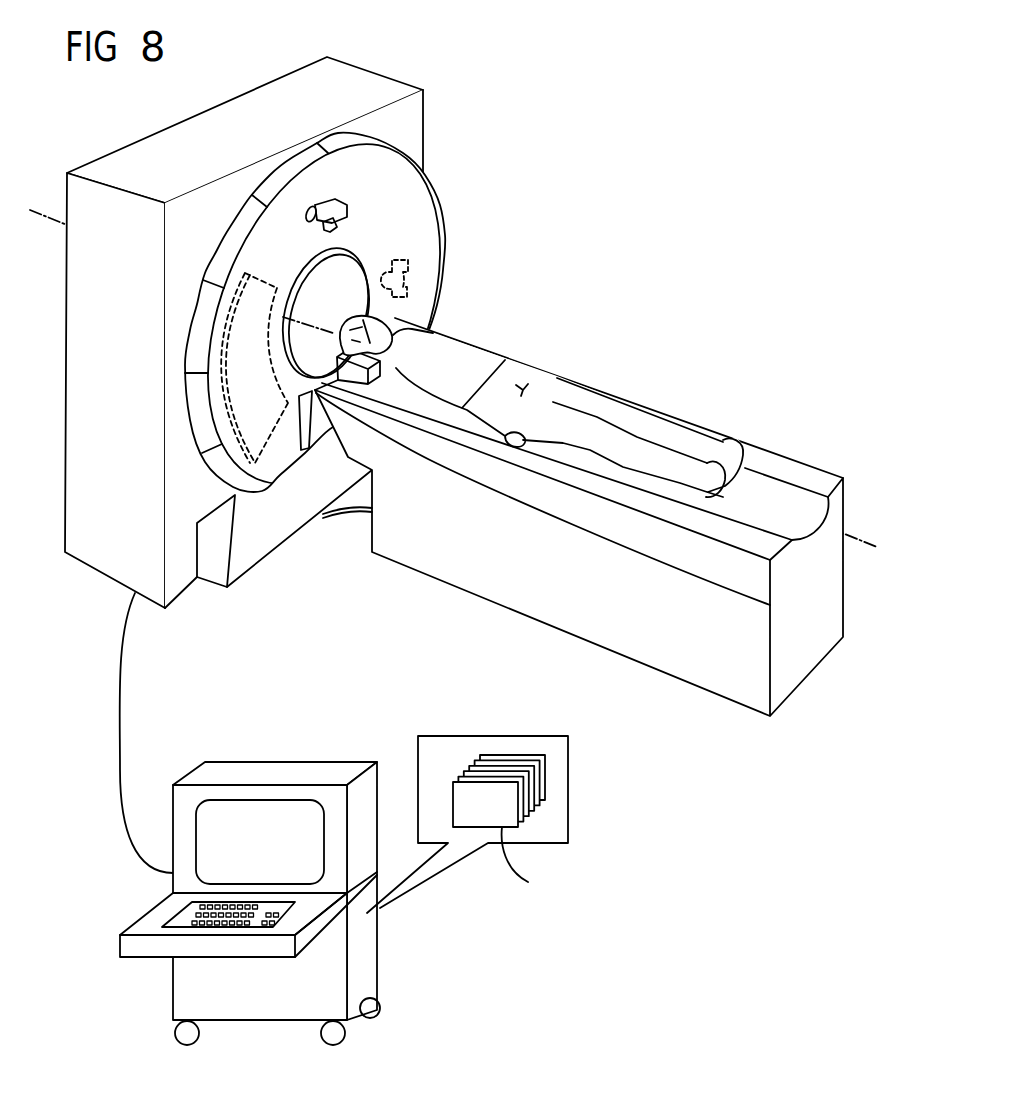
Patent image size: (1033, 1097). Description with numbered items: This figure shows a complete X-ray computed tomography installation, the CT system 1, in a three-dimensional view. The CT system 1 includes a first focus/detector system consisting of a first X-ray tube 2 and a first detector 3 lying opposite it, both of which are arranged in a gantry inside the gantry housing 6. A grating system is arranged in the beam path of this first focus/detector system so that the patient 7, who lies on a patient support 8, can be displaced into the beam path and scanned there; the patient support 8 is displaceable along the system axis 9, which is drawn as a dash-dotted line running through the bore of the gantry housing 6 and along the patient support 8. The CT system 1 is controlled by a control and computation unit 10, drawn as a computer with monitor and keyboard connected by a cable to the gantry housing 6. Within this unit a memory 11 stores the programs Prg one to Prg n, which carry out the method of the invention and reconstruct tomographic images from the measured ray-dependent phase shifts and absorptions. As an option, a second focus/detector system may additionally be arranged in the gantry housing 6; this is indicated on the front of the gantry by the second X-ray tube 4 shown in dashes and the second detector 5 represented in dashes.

The CT system 1 is at (612, 243).
The first X-ray tube 2 is at (348, 210).
The first detector 3 is at (313, 433).
The second X-ray tube 4 is at (405, 282).
The second detector 5 is at (253, 437).
The gantry housing 6 is at (93, 550).
The patient 7 is at (438, 352).
The patient support 8 is at (557, 600).
The system axis 9 is at (869, 537).
The control and computation unit 10 is at (362, 967).
The memory 11 is at (450, 735).